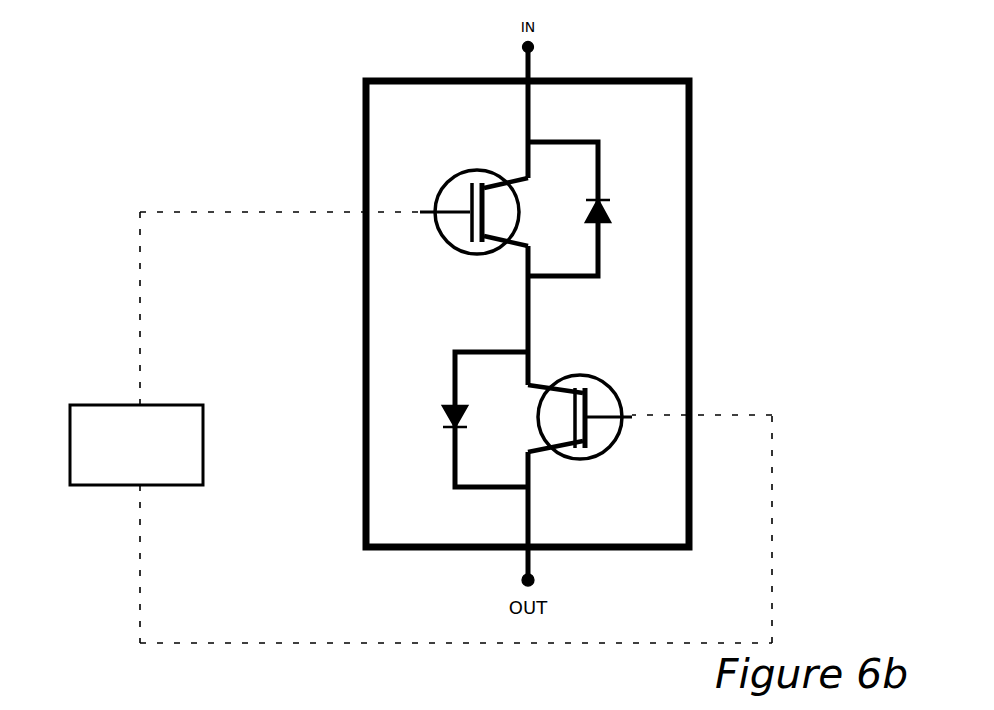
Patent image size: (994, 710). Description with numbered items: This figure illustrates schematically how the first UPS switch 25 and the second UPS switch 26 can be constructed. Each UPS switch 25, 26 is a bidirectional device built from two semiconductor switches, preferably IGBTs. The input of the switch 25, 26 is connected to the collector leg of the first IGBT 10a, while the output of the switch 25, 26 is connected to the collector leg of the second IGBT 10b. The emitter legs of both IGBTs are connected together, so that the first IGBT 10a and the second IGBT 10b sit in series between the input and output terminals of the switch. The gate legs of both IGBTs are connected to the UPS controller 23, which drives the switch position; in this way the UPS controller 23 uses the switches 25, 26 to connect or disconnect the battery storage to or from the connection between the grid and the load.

The first IGBT 10a is at (642, 157).
The second IGBT 10b is at (648, 378).
The UPS controller 23 is at (102, 471).
The first UPS switch 25 is at (365, 306).
The second UPS switch 26 is at (363, 102).